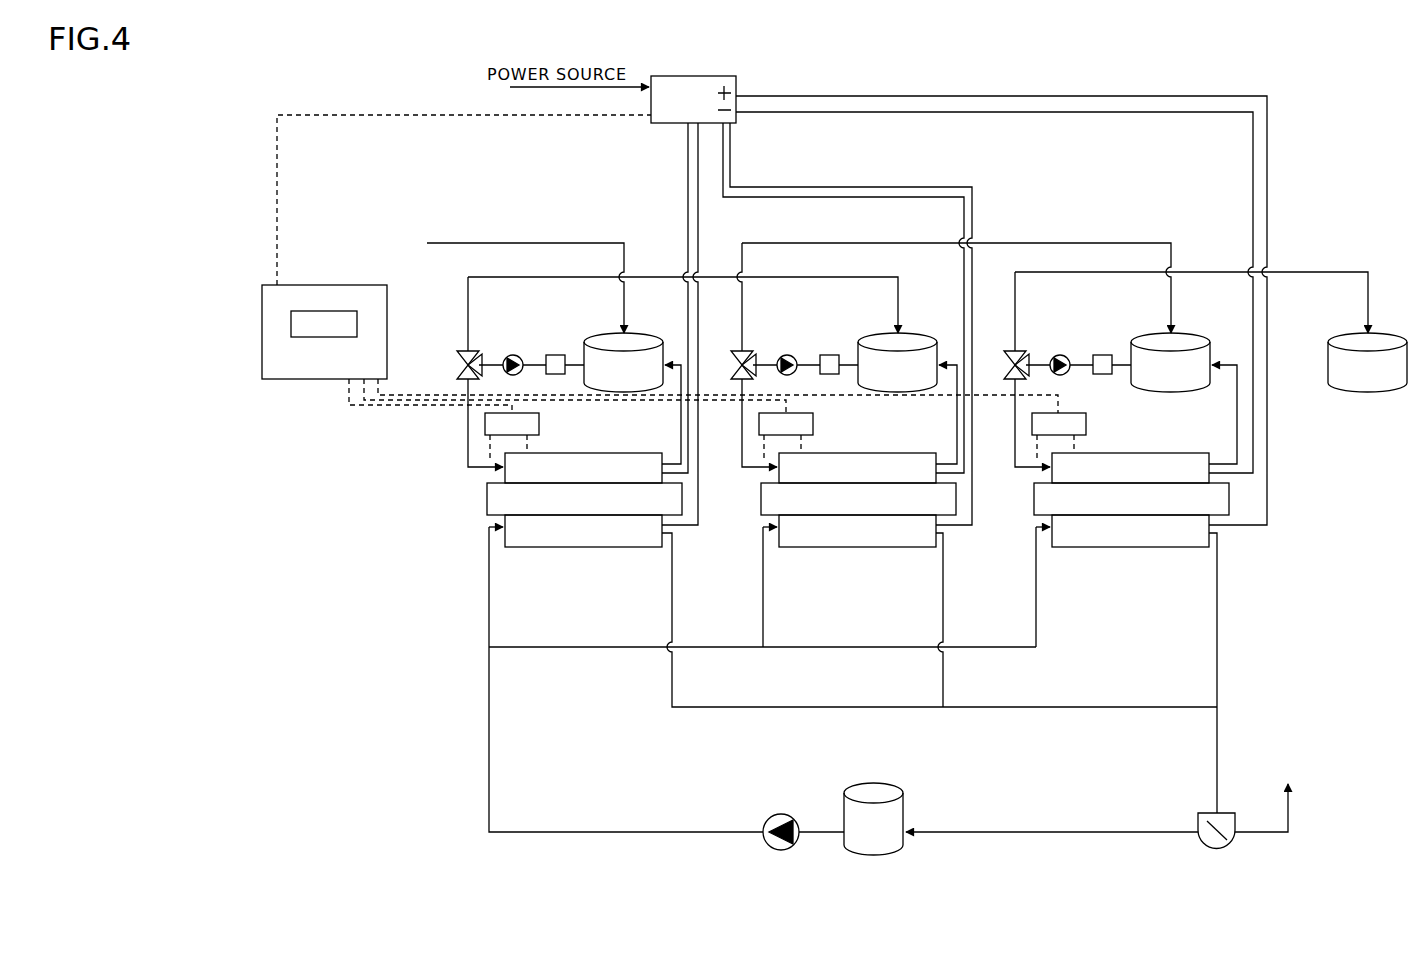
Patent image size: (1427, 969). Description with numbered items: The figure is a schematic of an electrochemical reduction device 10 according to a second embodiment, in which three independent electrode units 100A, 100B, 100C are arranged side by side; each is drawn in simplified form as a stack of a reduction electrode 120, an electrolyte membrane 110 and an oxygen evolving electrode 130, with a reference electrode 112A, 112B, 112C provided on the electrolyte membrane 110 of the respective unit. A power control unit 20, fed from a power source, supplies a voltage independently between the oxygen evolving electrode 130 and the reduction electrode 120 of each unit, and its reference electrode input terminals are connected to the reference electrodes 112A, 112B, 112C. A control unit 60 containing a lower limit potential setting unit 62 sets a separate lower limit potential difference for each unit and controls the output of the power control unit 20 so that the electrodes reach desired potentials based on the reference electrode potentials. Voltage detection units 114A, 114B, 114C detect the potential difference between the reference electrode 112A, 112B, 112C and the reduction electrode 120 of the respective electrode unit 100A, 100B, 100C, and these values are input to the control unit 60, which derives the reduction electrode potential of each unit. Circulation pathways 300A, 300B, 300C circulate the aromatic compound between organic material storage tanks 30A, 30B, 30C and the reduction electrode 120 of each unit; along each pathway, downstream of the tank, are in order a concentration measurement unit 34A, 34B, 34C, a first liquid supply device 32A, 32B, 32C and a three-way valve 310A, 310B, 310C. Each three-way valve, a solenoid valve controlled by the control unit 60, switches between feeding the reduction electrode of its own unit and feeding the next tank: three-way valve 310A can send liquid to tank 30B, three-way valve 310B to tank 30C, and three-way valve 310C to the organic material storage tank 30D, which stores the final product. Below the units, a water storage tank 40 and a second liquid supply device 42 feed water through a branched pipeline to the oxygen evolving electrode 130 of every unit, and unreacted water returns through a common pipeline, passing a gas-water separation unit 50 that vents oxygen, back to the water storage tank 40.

The electrochemical reduction device 10 is at (876, 902).
The power control unit 20 is at (741, 80).
The organic material storage tank 30A is at (639, 335).
The organic material storage tank 30B is at (913, 335).
The organic material storage tank 30C is at (1186, 335).
The organic material storage tank 30D is at (1382, 336).
The first liquid supply device 32A is at (519, 354).
The first liquid supply device 32B is at (793, 354).
The first liquid supply device 32C is at (1066, 354).
The concentration measurement unit 34A is at (557, 354).
The concentration measurement unit 34B is at (831, 354).
The concentration measurement unit 34C is at (1104, 354).
The water storage tank 40 is at (891, 787).
The second liquid supply device 42 is at (783, 817).
The gas-water separation unit 50 is at (1224, 848).
The control unit 60 is at (303, 285).
The lower limit potential setting unit 62 is at (291, 322).
The electrode unit 100A is at (452, 545).
The electrode unit 100B is at (726, 545).
The electrode unit 100C is at (999, 545).
The electrolyte membrane 110 is at (488, 480).
The reference electrode 112A is at (505, 480).
The reference electrode 112B is at (779, 480).
The reference electrode 112C is at (1052, 480).
The voltage detection unit 114A is at (539, 425).
The voltage detection unit 114B is at (813, 425).
The voltage detection unit 114C is at (1086, 425).
The reduction electrode 120 is at (500, 458).
The oxygen evolving electrode 130 is at (500, 532).
The circulation pathway 300A is at (468, 452).
The circulation pathway 300B is at (742, 452).
The circulation pathway 300C is at (1015, 452).
The three-way valve 310A is at (466, 352).
The three-way valve 310B is at (740, 352).
The three-way valve 310C is at (1013, 352).